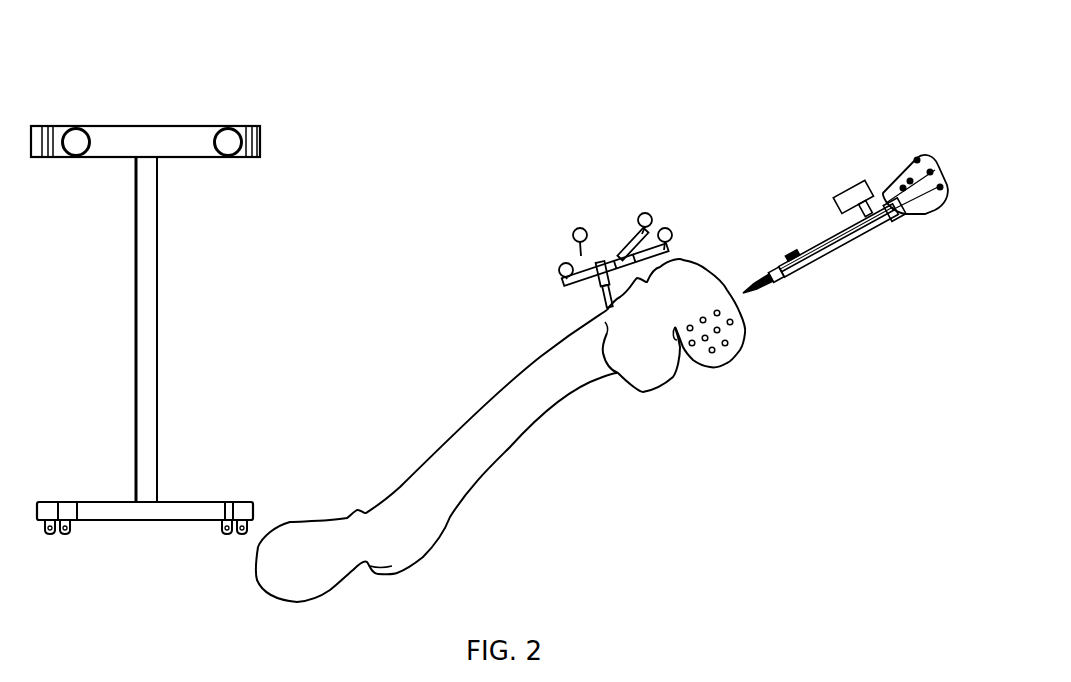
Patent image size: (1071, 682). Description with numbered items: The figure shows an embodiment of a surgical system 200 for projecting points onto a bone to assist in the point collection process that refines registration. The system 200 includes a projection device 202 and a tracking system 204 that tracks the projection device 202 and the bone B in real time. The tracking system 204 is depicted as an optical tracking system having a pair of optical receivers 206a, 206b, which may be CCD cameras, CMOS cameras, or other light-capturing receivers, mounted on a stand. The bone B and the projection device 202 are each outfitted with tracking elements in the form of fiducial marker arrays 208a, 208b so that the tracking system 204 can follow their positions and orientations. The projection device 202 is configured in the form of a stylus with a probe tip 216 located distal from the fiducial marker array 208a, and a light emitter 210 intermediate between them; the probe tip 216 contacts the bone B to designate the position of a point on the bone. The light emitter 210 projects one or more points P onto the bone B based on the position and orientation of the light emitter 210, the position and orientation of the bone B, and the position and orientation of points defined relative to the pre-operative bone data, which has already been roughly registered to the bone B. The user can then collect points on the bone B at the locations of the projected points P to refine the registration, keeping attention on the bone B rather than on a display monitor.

The surgical system 200 is at (122, 60).
The projection device 202 is at (797, 212).
The tracking system 204 is at (285, 125).
The optical receiver 206a is at (67, 158).
The optical receiver 206b is at (228, 158).
The fiducial marker array 208a is at (933, 158).
The fiducial marker array 208b is at (625, 243).
The light emitter 210 is at (857, 180).
The probe tip 216 is at (757, 290).
The bone B is at (477, 405).
The points P is at (688, 350).